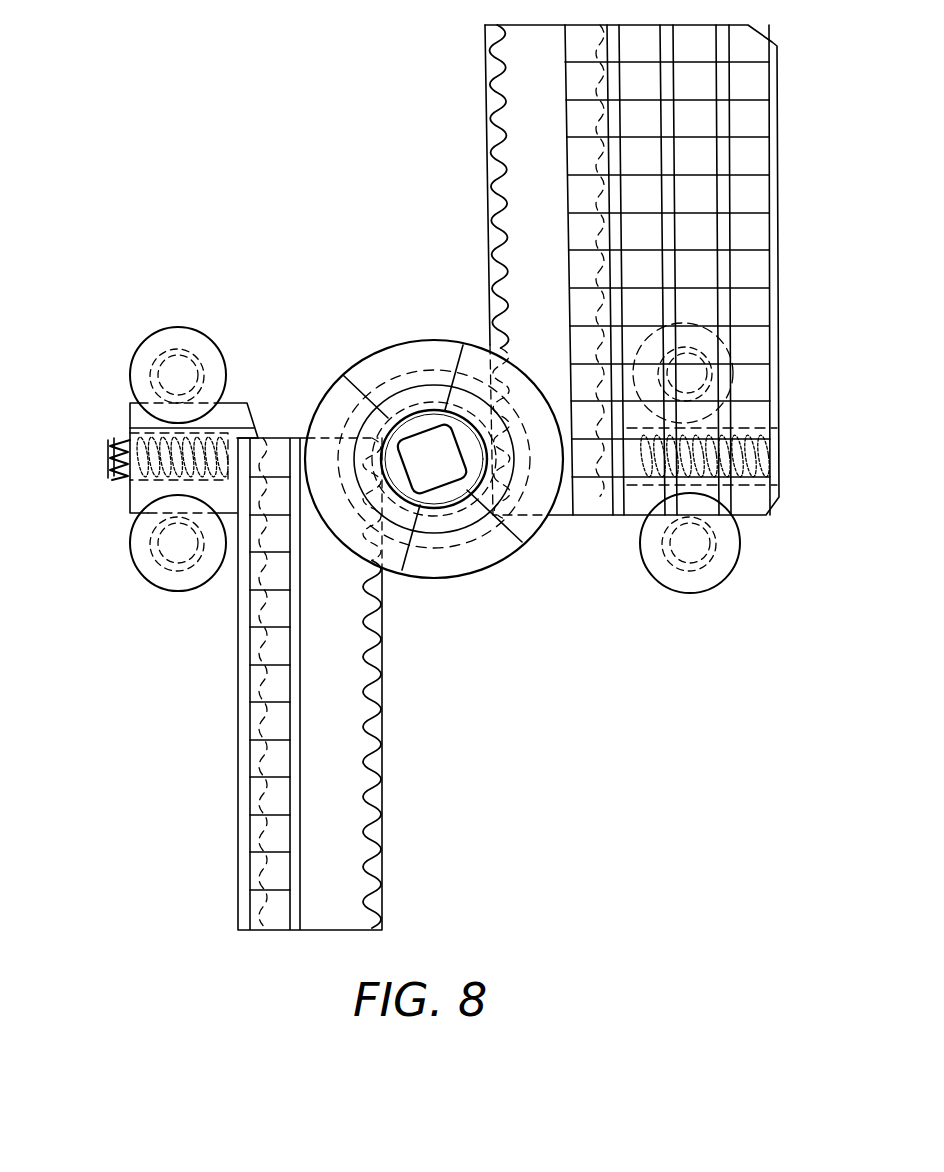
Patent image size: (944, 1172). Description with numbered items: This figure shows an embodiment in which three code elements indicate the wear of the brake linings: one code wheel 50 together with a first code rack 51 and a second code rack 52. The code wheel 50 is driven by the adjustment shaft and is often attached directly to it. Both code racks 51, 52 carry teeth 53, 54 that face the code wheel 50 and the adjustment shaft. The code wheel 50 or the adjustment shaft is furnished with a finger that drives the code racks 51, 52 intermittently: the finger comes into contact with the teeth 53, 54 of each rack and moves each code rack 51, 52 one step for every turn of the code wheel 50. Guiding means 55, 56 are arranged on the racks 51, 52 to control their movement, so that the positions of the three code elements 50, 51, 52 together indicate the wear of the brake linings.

The code wheel 50 is at (477, 552).
The first code rack 51 is at (757, 238).
The second code rack 52 is at (323, 708).
The teeth 53 is at (380, 828).
The teeth 54 is at (495, 183).
The guiding means 55 is at (710, 570).
The guiding means 56 is at (140, 418).